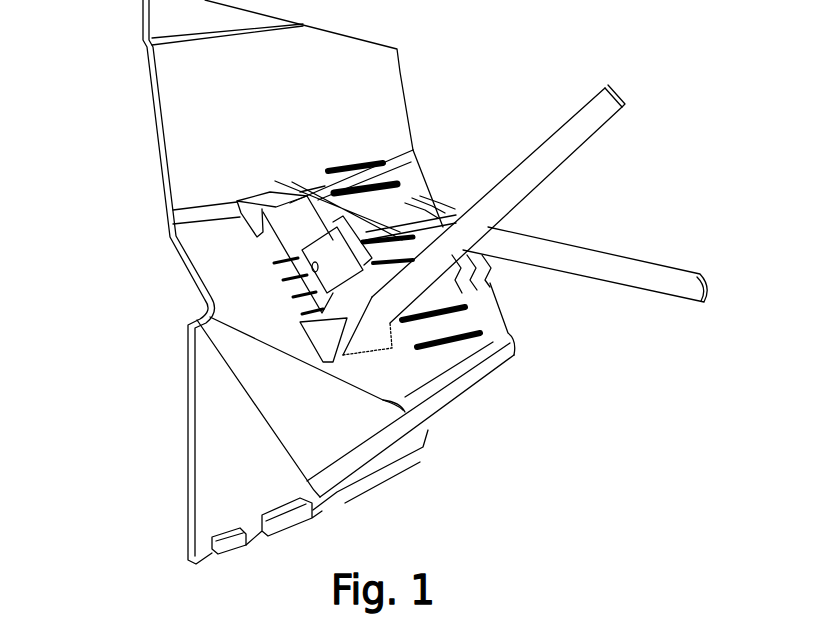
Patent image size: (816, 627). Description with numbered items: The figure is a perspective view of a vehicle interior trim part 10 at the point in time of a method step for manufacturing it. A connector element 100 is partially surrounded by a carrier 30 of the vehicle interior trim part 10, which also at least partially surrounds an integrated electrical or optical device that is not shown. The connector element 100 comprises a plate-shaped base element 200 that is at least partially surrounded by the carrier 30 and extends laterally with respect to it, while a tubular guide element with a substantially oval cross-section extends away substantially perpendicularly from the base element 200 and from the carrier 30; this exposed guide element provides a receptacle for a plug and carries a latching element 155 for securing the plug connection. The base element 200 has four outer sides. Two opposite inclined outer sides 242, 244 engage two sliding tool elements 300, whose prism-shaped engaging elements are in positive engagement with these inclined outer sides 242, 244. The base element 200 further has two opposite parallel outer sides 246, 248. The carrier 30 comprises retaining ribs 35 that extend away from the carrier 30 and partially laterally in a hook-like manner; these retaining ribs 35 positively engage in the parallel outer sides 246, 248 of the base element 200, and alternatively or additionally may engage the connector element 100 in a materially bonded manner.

The vehicle interior trim part 10 is at (266, 95).
The latching element 155 is at (302, 194).
The inclined outer side 244 is at (238, 201).
The base element 200 is at (270, 262).
The parallel outer side 246 is at (262, 288).
The retaining ribs 35 is at (383, 400).
The connector element 100 is at (433, 205).
The sliding tool elements 300 is at (585, 130).
The parallel outer side 248 is at (517, 343).
The carrier 30 is at (400, 372).
The inclined outer side 242 is at (335, 392).